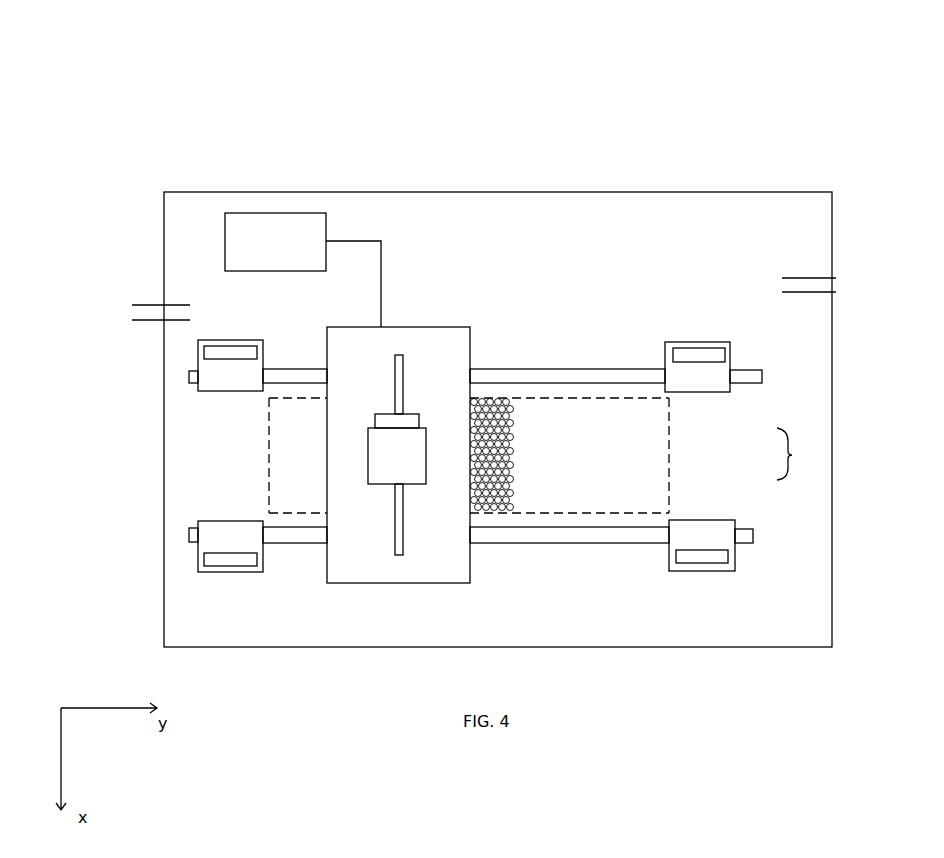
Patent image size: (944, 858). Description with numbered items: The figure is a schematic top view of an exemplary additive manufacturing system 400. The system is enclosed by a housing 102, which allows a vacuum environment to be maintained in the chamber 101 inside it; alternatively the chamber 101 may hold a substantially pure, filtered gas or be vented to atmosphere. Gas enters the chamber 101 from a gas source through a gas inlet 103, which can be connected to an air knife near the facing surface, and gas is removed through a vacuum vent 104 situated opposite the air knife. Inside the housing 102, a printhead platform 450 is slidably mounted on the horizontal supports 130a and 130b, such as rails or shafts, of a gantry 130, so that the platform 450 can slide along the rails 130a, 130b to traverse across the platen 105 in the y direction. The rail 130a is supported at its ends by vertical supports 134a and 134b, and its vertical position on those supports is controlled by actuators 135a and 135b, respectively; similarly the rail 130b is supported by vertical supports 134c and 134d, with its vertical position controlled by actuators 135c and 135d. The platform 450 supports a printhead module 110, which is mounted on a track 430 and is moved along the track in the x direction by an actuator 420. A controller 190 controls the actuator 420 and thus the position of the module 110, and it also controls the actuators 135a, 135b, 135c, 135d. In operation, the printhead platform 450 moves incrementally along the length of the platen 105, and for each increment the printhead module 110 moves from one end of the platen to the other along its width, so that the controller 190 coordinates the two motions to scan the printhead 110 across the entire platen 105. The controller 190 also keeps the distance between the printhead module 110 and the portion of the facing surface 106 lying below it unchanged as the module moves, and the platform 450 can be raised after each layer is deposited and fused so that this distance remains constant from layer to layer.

The additive manufacturing system 400 is at (503, 95).
The housing 102 is at (507, 192).
The chamber 101 is at (687, 240).
The controller 190 is at (303, 270).
The gas inlet 103 is at (138, 313).
The vacuum vent 104 is at (833, 287).
The printhead platform 450 is at (438, 568).
The platen 105 is at (469, 455).
The facing surface 106 is at (498, 417).
The printhead module 110 is at (382, 462).
The actuator 420 is at (410, 418).
The track 430 is at (393, 535).
The gantry 130 is at (793, 455).
The rail 130a is at (738, 527).
The rail 130b is at (753, 385).
The vertical support 134a is at (240, 561).
The vertical support 134b is at (718, 560).
The vertical support 134c is at (680, 353).
The vertical support 134d is at (211, 352).
The actuator 135a is at (208, 546).
The actuator 135b is at (678, 541).
The actuator 135c is at (722, 373).
The actuator 135d is at (253, 366).